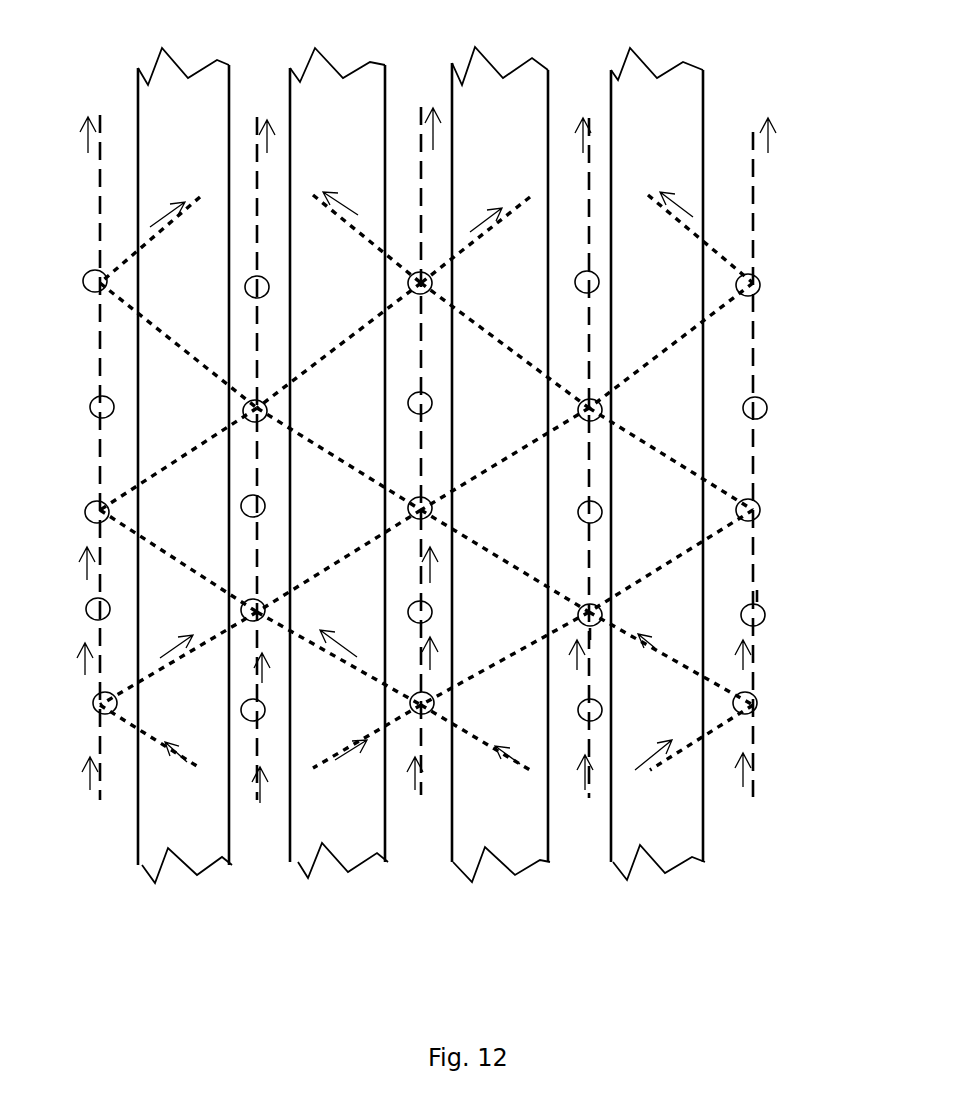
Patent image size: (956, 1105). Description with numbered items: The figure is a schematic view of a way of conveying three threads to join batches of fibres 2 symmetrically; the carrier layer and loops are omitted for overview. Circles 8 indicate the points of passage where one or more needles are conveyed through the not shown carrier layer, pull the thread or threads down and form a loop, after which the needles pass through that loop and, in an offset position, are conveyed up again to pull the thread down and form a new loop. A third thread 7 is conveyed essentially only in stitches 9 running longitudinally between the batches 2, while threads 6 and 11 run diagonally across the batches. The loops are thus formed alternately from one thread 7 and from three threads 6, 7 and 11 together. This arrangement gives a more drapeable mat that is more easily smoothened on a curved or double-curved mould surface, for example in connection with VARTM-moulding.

The batch of fibres 2 is at (327, 118).
The thread 6 is at (167, 757).
The third thread 7 is at (252, 768).
The circle 8 is at (612, 402).
The stitch 9 is at (757, 587).
The thread 11 is at (333, 760).